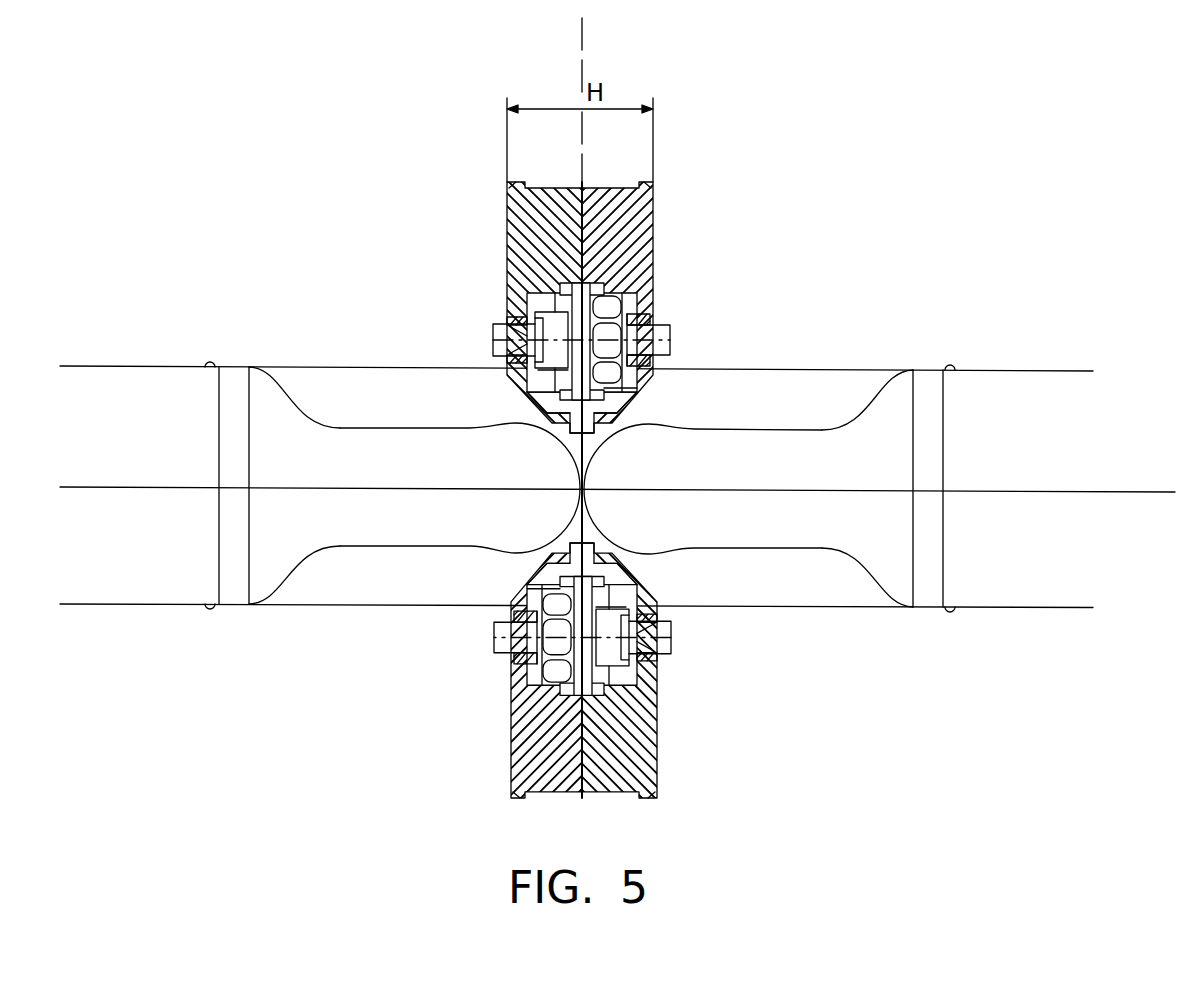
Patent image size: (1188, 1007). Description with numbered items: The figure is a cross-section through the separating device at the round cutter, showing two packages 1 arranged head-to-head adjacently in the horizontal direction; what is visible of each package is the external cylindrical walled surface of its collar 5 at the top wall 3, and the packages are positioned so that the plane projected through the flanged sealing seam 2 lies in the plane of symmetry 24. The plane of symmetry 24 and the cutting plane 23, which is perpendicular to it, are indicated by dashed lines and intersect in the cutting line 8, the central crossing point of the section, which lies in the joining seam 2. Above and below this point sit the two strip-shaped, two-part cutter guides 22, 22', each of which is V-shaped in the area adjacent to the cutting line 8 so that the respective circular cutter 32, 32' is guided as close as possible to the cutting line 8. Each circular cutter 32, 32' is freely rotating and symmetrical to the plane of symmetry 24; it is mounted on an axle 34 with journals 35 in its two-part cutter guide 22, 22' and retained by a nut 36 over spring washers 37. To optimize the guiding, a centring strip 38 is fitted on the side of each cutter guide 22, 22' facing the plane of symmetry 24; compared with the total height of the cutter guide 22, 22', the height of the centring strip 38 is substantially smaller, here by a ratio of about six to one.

The package 1 is at (1045, 371).
The joining seam 2 is at (828, 490).
The top wall 3 is at (538, 545).
The collar 5 is at (597, 438).
The cutting line 8 is at (587, 493).
The cutter guide 22 is at (524, 295).
The cutter guide 22' is at (524, 677).
The cutting plane 23 is at (579, 34).
The plane of symmetry 24 is at (1160, 491).
The circular cutter 32 is at (582, 307).
The circular cutter 32' is at (581, 670).
The axle 34 is at (507, 345).
The journal 35 is at (520, 322).
The nut 36 is at (612, 330).
The spring washer 37 is at (528, 290).
The centring strip 38 is at (638, 395).